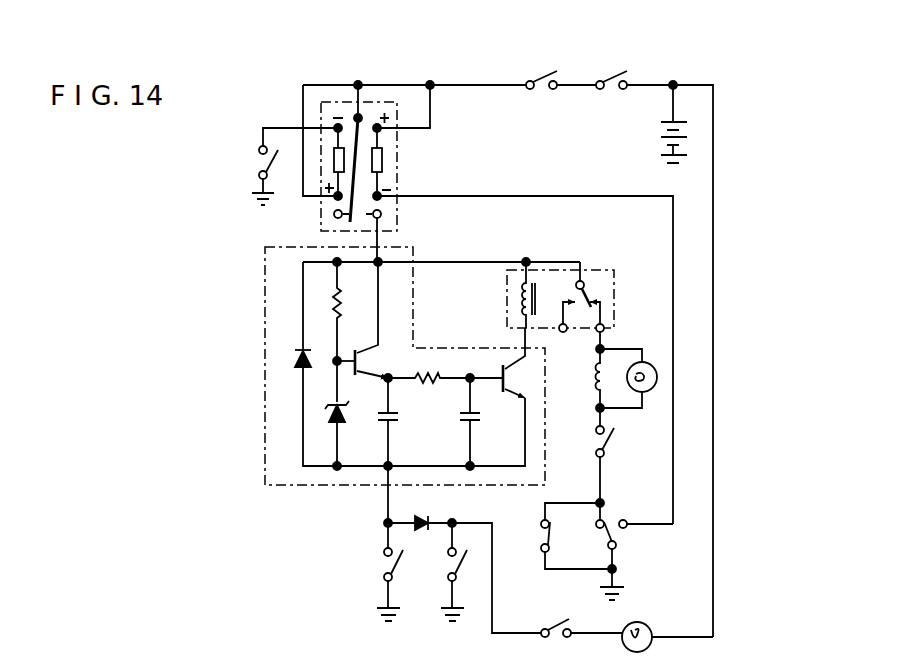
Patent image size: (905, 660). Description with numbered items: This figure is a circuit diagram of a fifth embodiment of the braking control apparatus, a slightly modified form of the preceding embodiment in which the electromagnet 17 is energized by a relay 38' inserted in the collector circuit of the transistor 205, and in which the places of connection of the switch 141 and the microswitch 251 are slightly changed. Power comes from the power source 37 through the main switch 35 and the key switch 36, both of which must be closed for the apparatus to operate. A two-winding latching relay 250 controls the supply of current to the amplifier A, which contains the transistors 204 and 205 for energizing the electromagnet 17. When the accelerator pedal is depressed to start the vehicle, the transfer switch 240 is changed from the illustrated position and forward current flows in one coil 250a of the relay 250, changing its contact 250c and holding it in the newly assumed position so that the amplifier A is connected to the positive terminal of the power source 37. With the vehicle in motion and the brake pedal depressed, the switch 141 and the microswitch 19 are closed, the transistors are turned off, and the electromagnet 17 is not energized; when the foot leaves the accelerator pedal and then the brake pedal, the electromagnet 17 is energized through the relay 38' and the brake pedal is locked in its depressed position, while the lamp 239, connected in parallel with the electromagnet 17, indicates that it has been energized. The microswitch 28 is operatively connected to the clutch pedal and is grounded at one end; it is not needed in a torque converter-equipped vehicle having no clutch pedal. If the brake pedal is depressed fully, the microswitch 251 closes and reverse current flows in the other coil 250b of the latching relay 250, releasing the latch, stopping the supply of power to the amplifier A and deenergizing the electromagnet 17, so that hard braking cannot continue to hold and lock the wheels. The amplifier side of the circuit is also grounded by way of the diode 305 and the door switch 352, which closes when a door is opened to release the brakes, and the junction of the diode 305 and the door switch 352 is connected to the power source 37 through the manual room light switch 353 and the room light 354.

The microswitch 251 is at (258, 160).
The two-winding latching relay 250 is at (397, 140).
The coil 250a is at (382, 163).
The other coil 250b is at (334, 156).
The contact 250c is at (350, 202).
The main switch 35 is at (543, 72).
The key switch 36 is at (613, 72).
The power source 37 is at (660, 134).
The amplifier A is at (413, 288).
The transistor 204 is at (366, 362).
The transistor 205 is at (512, 394).
The relay 38' is at (566, 289).
The electromagnet 17 is at (594, 377).
The lamp 239 is at (657, 376).
The microswitch 19 is at (615, 440).
The microswitch 28 is at (543, 530).
The transfer switch 240 is at (615, 536).
The diode 305 is at (428, 514).
The switch 141 is at (381, 568).
The door switch 352 is at (448, 566).
The manual room light switch 353 is at (556, 628).
The room light 354 is at (629, 625).